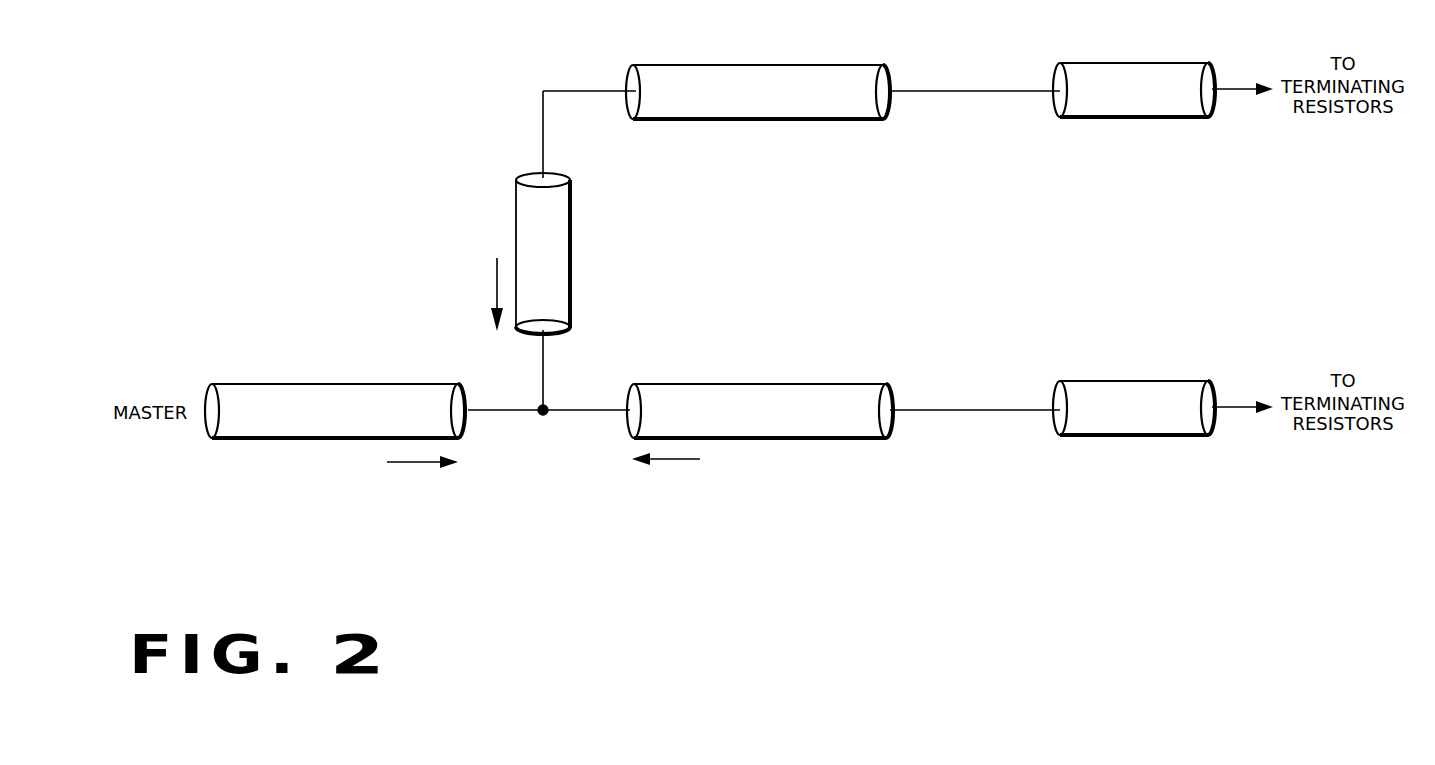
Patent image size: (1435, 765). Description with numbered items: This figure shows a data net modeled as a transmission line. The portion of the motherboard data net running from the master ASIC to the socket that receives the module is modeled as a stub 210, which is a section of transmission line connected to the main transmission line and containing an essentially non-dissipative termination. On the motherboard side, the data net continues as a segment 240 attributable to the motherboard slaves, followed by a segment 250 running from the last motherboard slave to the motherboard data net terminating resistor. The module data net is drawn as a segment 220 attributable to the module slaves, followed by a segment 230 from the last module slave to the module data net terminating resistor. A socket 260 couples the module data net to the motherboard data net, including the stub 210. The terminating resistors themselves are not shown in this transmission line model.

The stub 210 is at (445, 432).
The segment 220 is at (870, 110).
The segment 230 is at (1193, 107).
The segment 240 is at (870, 430).
The segment 250 is at (1193, 427).
The socket 260 is at (559, 312).